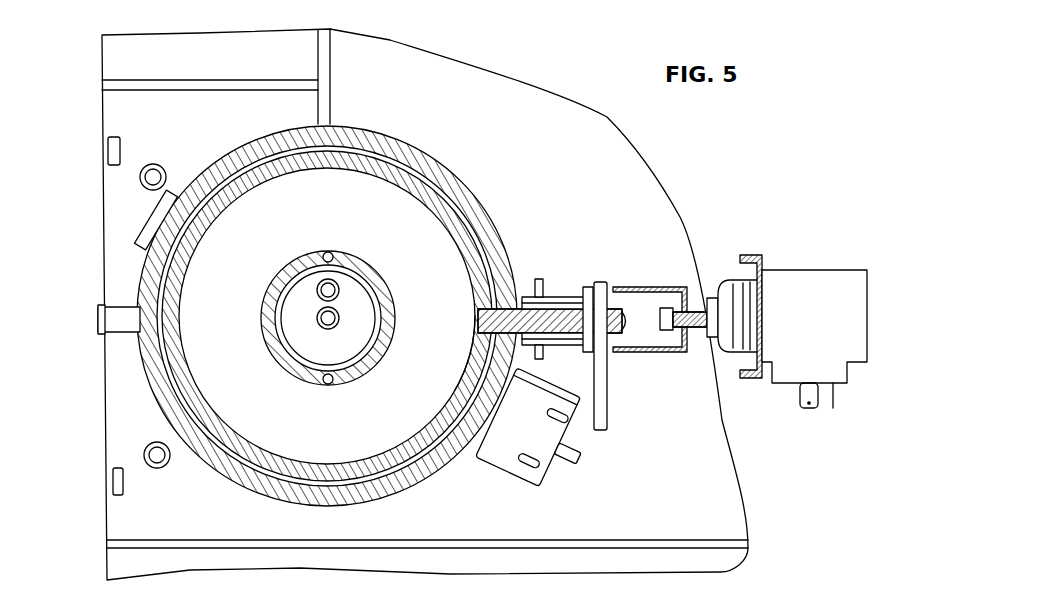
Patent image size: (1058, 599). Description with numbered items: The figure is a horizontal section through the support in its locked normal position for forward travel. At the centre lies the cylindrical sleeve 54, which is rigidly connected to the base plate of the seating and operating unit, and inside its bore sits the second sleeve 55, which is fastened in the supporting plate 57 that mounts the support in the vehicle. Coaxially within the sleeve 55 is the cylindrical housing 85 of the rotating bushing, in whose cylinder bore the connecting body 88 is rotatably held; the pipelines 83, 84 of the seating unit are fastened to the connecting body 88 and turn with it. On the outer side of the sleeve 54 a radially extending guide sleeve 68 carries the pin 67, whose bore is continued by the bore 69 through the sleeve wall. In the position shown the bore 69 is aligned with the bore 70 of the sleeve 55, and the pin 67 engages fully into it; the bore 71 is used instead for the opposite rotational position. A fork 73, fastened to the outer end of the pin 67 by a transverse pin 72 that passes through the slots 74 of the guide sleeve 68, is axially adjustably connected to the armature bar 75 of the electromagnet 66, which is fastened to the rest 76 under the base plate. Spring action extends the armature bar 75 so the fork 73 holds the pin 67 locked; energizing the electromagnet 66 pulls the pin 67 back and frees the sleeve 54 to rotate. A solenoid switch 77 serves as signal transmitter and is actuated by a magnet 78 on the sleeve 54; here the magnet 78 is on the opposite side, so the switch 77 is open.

The cylindrical sleeve 54 is at (364, 136).
The second sleeve 55 is at (413, 150).
The supporting plate 57 is at (508, 93).
The electromagnet 66 is at (788, 288).
The pin 67 is at (478, 318).
The guide sleeve 68 is at (556, 297).
The bore 69 is at (512, 294).
The bore 70 is at (472, 345).
The bore 71 is at (178, 320).
The transverse pin 72 is at (607, 401).
The fork 73 is at (640, 287).
The slots 74 is at (593, 292).
The armature bar 75 is at (673, 353).
The rest 76 is at (757, 257).
The solenoid switch 77 is at (542, 452).
The magnet 78 is at (150, 216).
The pipeline 83 is at (342, 316).
The pipeline 84 is at (343, 288).
The cylindrical housing 85 is at (297, 262).
The connecting body 88 is at (292, 312).